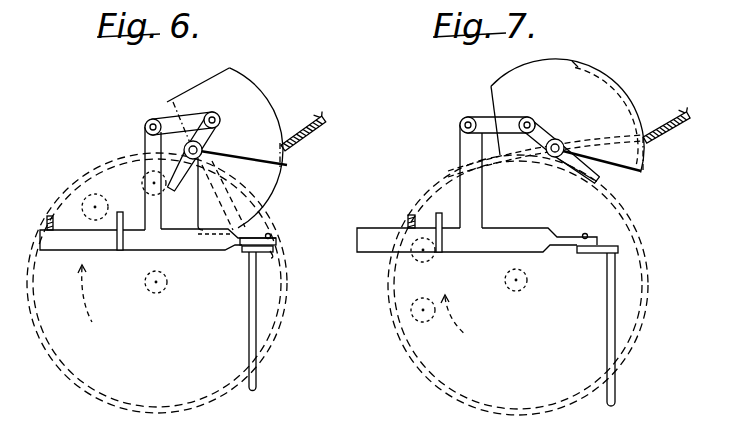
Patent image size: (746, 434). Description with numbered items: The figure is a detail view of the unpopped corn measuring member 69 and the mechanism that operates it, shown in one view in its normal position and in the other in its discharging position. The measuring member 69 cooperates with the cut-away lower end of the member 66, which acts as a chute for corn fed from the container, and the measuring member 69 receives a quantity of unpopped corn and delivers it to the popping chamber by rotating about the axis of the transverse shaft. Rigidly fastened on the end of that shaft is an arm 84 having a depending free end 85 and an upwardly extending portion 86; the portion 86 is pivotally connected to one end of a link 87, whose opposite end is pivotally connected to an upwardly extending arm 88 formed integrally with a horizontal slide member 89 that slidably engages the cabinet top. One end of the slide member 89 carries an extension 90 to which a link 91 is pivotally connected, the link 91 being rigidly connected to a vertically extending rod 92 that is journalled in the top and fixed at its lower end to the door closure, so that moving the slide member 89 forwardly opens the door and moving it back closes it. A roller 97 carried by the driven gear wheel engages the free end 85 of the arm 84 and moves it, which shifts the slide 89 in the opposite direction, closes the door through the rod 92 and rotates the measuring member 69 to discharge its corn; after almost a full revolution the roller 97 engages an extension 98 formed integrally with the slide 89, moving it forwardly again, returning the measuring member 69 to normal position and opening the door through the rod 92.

In FIG. 6, the member 66 is at (313, 133).
In FIG. 7, the member 66 is at (670, 135).
In FIG. 6, the measuring member 69 is at (254, 83).
In FIG. 7, the measuring member 69 is at (608, 79).
In FIG. 6, the arm 84 is at (284, 166).
In FIG. 7, the arm 84 is at (550, 156).
In FIG. 6, the depending free end 85 is at (184, 186).
In FIG. 7, the depending free end 85 is at (600, 179).
In FIG. 6, the upwardly extending portion 86 is at (213, 132).
In FIG. 7, the upwardly extending portion 86 is at (547, 128).
In FIG. 6, the link 87 is at (166, 118).
In FIG. 7, the link 87 is at (483, 122).
In FIG. 6, the upwardly extending arm 88 is at (144, 137).
In FIG. 7, the upwardly extending arm 88 is at (459, 147).
In FIG. 6, the horizontal slide member 89 is at (230, 249).
In FIG. 7, the horizontal slide member 89 is at (508, 232).
In FIG. 6, the extension 90 is at (277, 238).
In FIG. 7, the extension 90 is at (593, 238).
In FIG. 6, the link 91 is at (283, 257).
In FIG. 7, the link 91 is at (598, 253).
In FIG. 6, the vertically extending rod 92 is at (256, 376).
In FIG. 7, the vertically extending rod 92 is at (620, 382).
In FIG. 6, the roller 97 is at (83, 175).
In FIG. 7, the roller 97 is at (420, 322).
In FIG. 6, the extension 98 is at (124, 243).
In FIG. 7, the extension 98 is at (439, 232).